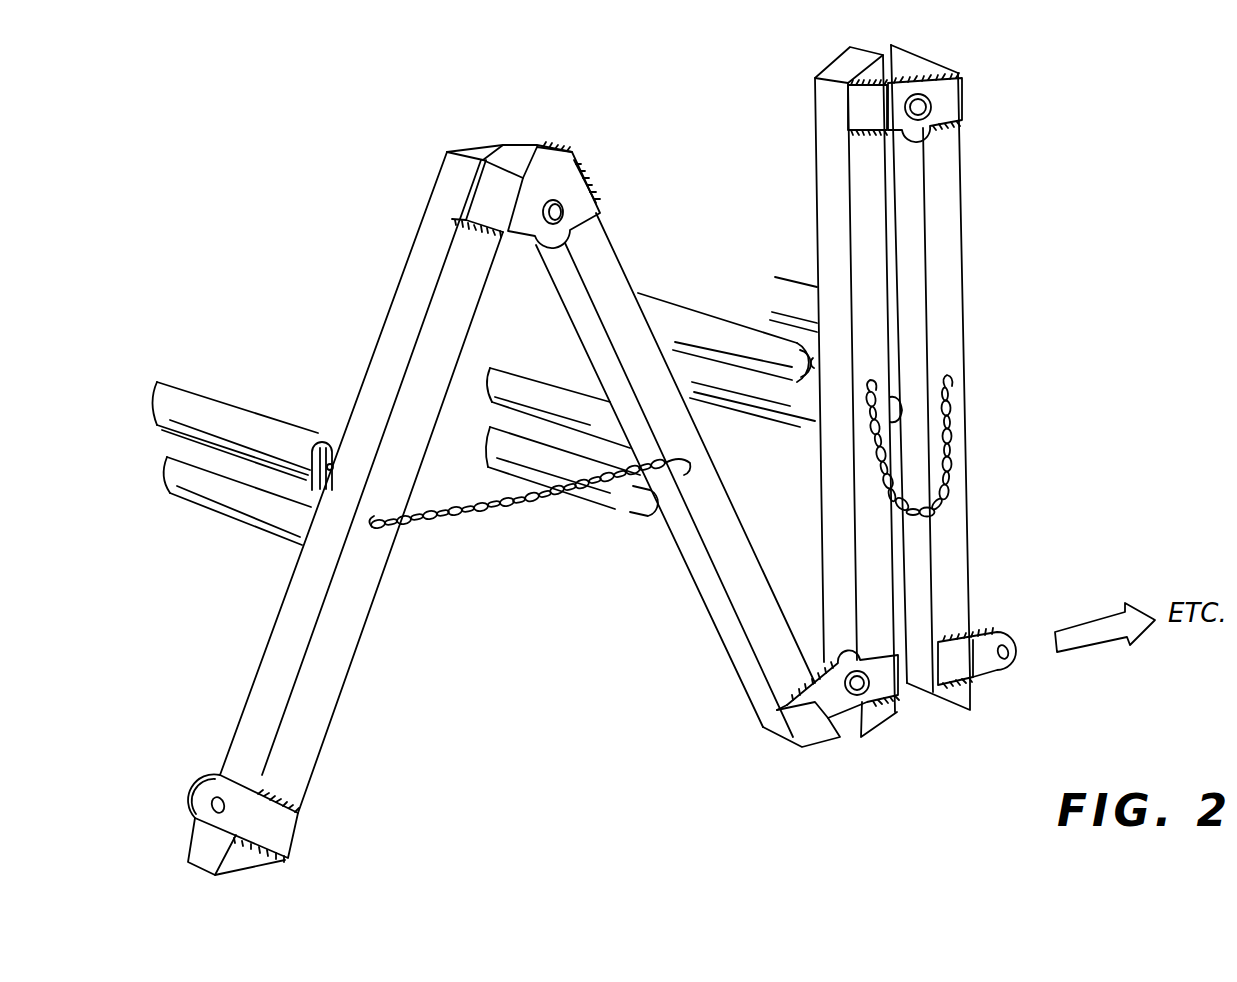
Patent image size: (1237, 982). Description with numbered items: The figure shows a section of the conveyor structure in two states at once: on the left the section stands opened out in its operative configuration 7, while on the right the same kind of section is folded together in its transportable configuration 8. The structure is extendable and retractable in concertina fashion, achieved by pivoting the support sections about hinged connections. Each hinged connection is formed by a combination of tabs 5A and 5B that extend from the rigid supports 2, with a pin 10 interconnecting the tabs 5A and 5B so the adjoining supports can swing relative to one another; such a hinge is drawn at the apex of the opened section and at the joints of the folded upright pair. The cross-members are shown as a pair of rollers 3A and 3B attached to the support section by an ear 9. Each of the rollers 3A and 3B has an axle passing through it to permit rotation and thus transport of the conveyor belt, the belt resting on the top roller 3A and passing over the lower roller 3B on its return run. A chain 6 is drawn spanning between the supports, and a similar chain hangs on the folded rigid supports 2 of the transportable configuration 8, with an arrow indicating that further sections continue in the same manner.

The operative configuration 7 is at (292, 190).
The transportable configuration 8 is at (985, 391).
The rigid support 2 is at (950, 300).
The top roller 3A is at (197, 408).
The lower roller 3B is at (217, 512).
The ear 9 is at (318, 443).
The tab 5A is at (570, 180).
The tab 5B is at (528, 203).
The pin 10 is at (556, 213).
The chain 6 is at (507, 520).